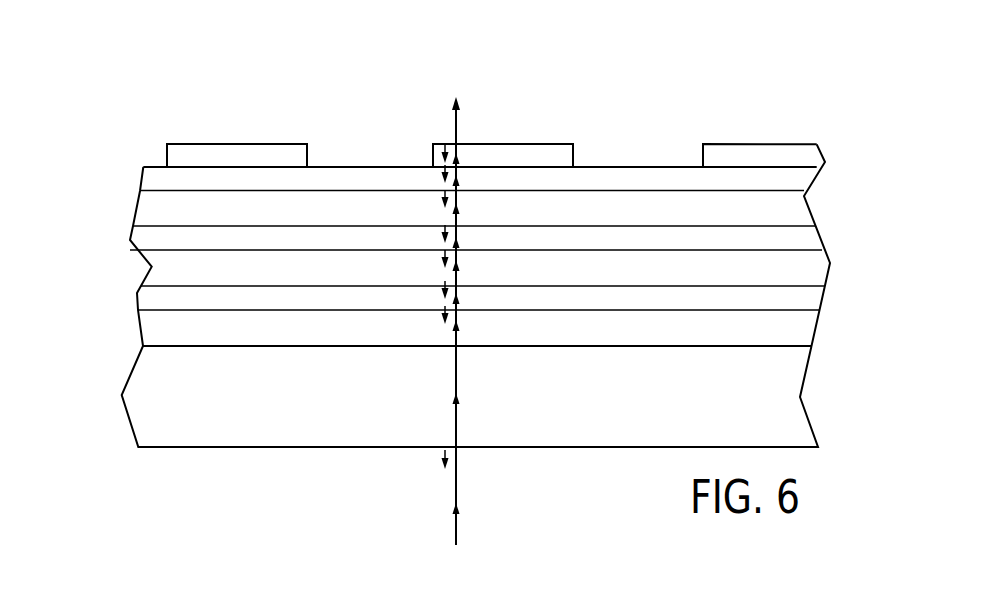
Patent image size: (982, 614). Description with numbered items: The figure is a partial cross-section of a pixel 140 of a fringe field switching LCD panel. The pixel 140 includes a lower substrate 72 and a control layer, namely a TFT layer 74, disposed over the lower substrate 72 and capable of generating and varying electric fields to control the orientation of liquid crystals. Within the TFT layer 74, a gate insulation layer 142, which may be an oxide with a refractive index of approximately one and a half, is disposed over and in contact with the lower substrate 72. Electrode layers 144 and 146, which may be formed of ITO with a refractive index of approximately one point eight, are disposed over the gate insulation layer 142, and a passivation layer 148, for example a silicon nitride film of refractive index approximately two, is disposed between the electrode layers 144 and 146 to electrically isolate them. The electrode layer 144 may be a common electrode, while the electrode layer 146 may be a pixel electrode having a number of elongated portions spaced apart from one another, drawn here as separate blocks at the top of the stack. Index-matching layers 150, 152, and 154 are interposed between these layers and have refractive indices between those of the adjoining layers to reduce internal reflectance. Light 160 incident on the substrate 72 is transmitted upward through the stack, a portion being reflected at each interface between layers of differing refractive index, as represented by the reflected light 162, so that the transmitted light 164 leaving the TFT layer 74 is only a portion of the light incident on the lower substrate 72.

The pixel 140 is at (150, 36).
The lower substrate 72 is at (133, 410).
The TFT layer 74 is at (137, 143).
The index-matching layer 154 is at (800, 179).
The passivation layer 148 is at (800, 214).
The index-matching layer 152 is at (810, 246).
The electrode layer 144 is at (818, 280).
The index-matching layer 150 is at (812, 300).
The gate insulation layer 142 is at (805, 336).
The electrode layer 146 is at (249, 152).
The transmitted light 164 is at (455, 119).
The incident light 160 is at (456, 477).
The reflected light 162 is at (443, 173).